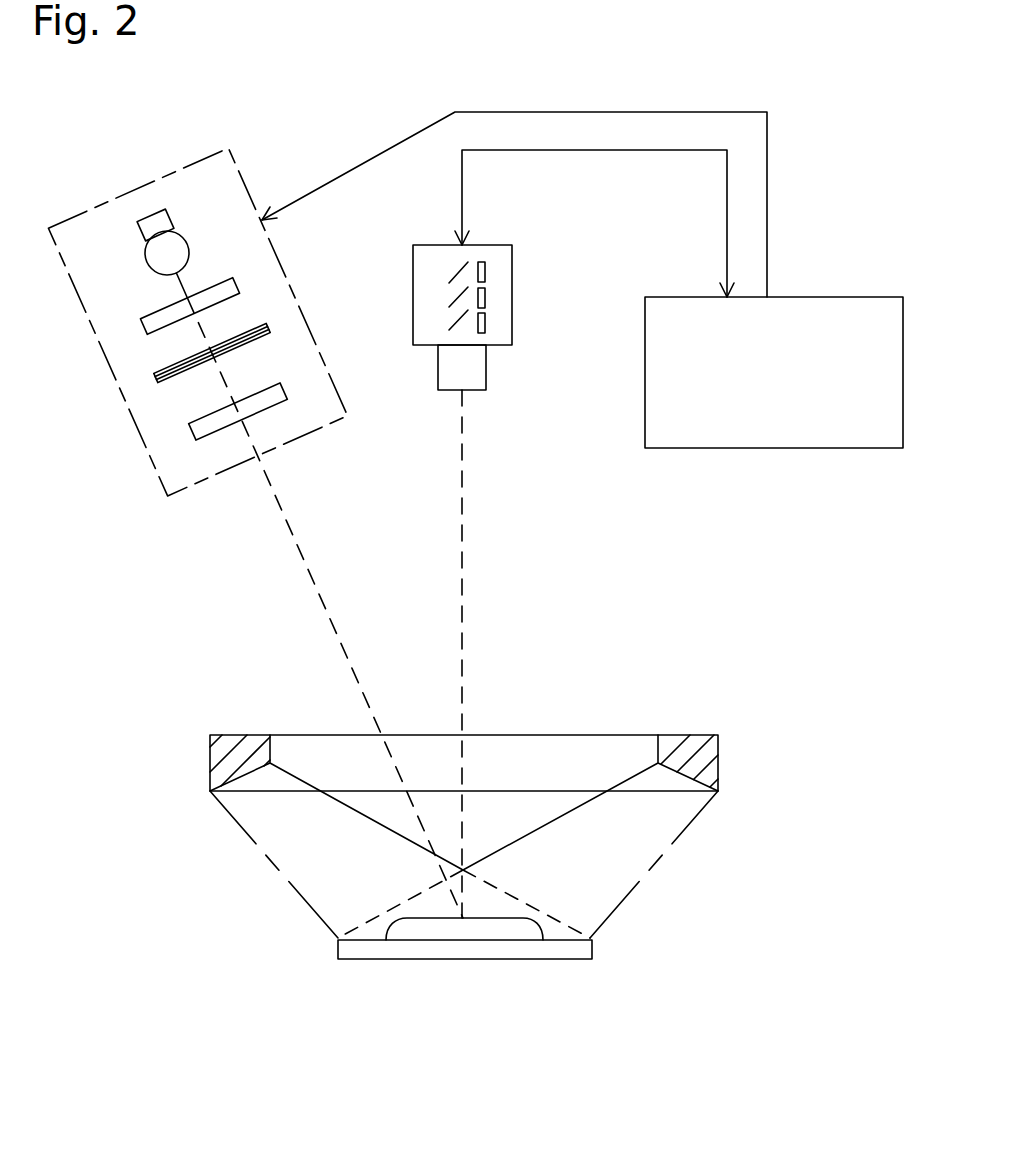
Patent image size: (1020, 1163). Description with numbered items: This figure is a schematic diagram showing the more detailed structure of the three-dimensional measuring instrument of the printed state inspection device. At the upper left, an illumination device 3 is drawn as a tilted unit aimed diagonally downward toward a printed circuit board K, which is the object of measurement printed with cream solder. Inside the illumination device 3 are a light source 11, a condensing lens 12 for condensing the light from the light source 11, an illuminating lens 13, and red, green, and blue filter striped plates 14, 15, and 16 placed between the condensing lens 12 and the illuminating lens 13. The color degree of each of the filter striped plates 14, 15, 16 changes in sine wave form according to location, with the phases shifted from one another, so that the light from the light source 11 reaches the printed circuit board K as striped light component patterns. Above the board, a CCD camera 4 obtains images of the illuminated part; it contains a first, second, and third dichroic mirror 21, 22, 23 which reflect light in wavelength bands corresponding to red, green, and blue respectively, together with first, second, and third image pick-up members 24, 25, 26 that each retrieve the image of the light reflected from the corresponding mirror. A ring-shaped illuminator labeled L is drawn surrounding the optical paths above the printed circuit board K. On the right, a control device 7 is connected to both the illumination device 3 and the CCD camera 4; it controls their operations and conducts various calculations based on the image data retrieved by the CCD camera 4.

The illumination device 3 is at (284, 256).
The CCD camera 4 is at (497, 245).
The control device 7 is at (686, 297).
The light source 11 is at (172, 215).
The condensing lens 12 is at (212, 284).
The illuminating lens 13 is at (198, 441).
The red filter striped plate 14 is at (155, 381).
The green filter striped plate 15 is at (150, 390).
The blue filter striped plate 16 is at (157, 389).
The first dichroic mirror 21 is at (458, 321).
The second dichroic mirror 22 is at (458, 298).
The third dichroic mirror 23 is at (458, 271).
The first image pick-up member 24 is at (489, 323).
The second image pick-up member 25 is at (489, 298).
The third image pick-up member 26 is at (489, 271).
The ring light L is at (690, 733).
The printed circuit board K is at (573, 959).